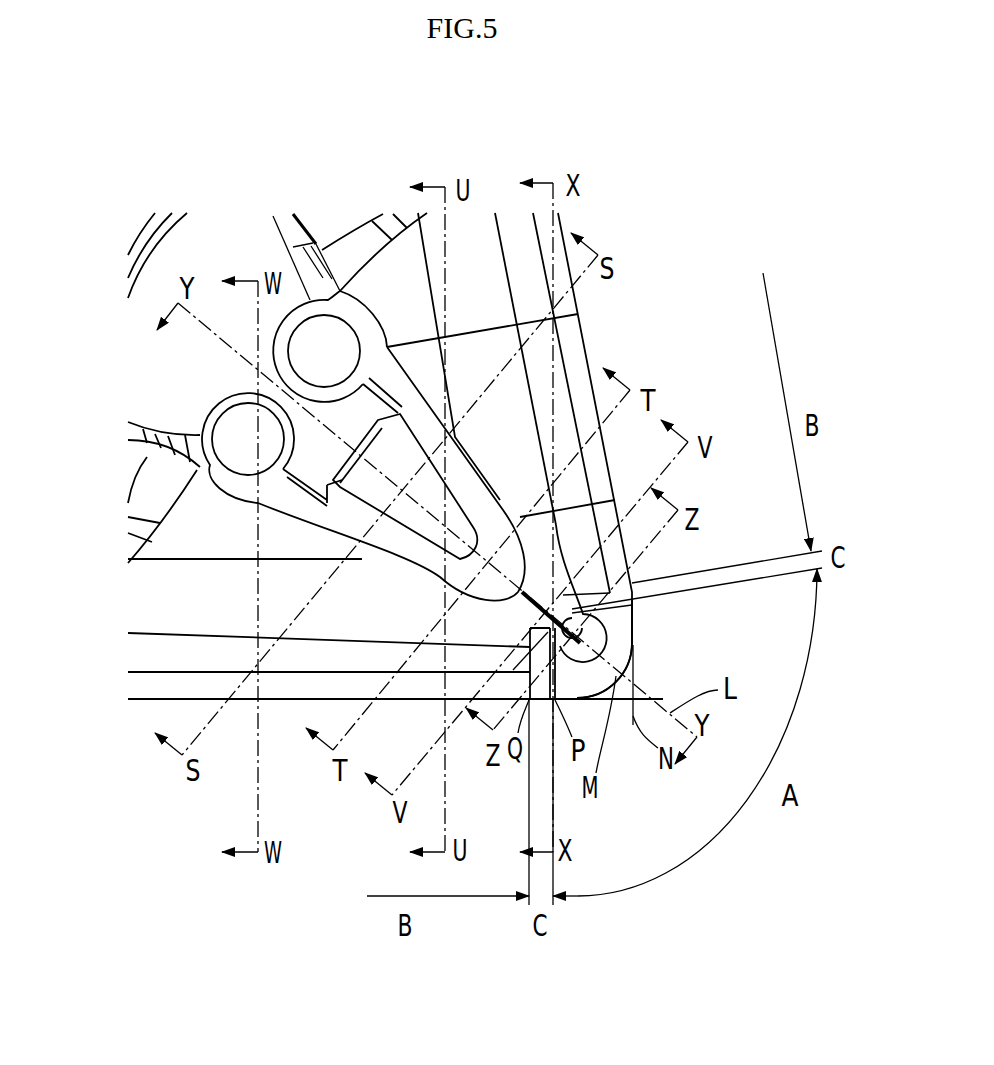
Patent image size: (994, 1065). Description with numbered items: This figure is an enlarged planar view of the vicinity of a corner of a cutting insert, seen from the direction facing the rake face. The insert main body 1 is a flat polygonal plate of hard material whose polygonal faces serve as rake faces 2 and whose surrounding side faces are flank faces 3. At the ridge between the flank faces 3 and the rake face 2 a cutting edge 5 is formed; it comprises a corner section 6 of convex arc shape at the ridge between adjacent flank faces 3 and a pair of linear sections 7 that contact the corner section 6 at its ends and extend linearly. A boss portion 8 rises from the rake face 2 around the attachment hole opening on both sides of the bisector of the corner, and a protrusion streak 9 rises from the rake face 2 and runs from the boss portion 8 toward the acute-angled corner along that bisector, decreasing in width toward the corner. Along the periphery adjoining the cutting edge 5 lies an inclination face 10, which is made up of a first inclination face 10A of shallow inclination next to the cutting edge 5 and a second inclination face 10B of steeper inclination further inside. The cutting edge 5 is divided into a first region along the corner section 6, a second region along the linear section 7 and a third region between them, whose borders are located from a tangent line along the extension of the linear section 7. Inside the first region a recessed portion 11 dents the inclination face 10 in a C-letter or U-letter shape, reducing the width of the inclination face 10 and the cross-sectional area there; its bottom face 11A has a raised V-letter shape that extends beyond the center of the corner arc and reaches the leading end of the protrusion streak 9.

The insert main body 1 is at (618, 360).
The rake face 2 is at (577, 542).
The flank face 3 is at (585, 342).
The cutting edge 5 is at (639, 673).
The corner section 6 is at (603, 686).
The linear section 7 is at (623, 543).
The boss portion 8 is at (337, 227).
The protrusion streak 9 is at (410, 523).
The inclination face 10 is at (648, 600).
The first inclination face 10A is at (608, 648).
The second inclination face 10B is at (603, 618).
The recessed portion 11 is at (550, 641).
The bottom face 11A is at (545, 568).